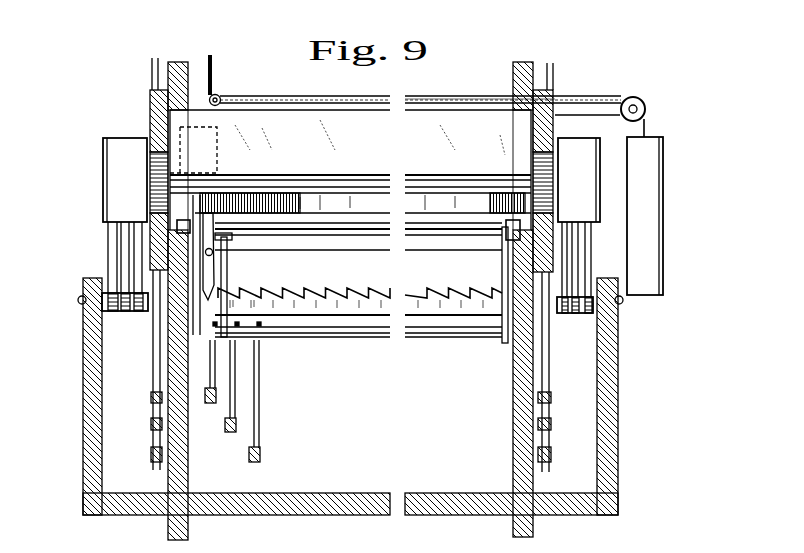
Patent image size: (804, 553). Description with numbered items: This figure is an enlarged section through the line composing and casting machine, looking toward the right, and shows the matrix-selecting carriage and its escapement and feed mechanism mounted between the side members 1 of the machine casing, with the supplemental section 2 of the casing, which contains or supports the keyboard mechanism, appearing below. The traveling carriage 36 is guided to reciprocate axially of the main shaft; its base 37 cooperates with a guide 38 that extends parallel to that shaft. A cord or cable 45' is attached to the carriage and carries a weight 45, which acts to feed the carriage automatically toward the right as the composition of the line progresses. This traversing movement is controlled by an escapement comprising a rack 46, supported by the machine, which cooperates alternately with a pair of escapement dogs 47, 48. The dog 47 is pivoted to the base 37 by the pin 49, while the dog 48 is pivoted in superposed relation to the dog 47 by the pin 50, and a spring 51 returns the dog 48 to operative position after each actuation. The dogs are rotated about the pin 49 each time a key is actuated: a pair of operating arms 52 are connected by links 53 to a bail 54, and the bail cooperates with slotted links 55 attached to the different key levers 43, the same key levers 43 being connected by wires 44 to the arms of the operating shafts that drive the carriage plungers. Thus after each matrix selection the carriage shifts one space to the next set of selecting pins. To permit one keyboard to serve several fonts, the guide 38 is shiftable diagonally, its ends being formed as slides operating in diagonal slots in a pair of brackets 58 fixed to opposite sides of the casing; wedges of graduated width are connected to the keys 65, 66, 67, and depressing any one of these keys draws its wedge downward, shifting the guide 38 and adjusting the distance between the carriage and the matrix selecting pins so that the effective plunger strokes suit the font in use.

The side members 1 is at (172, 62).
The supplemental section 2 is at (83, 408).
The carriage 36 is at (213, 66).
The base 37 is at (220, 193).
The guide 38 is at (285, 112).
The key levers 43 is at (160, 466).
The wires 44 is at (158, 70).
The weight 45 is at (625, 196).
The cord or cable 45' is at (480, 87).
The rack 46 is at (331, 296).
The escapement dog 47 is at (214, 258).
The escapement dog 48 is at (187, 277).
The pin 49 is at (333, 226).
The pin 50 is at (240, 256).
The spring 51 is at (163, 297).
The operating arms 52 is at (183, 238).
The links 53 is at (502, 269).
The bail 54 is at (377, 339).
The slotted links 55 is at (216, 366).
The brackets 58 is at (103, 166).
The key 65 is at (580, 313).
The key 66 is at (90, 345).
The key 67 is at (100, 302).